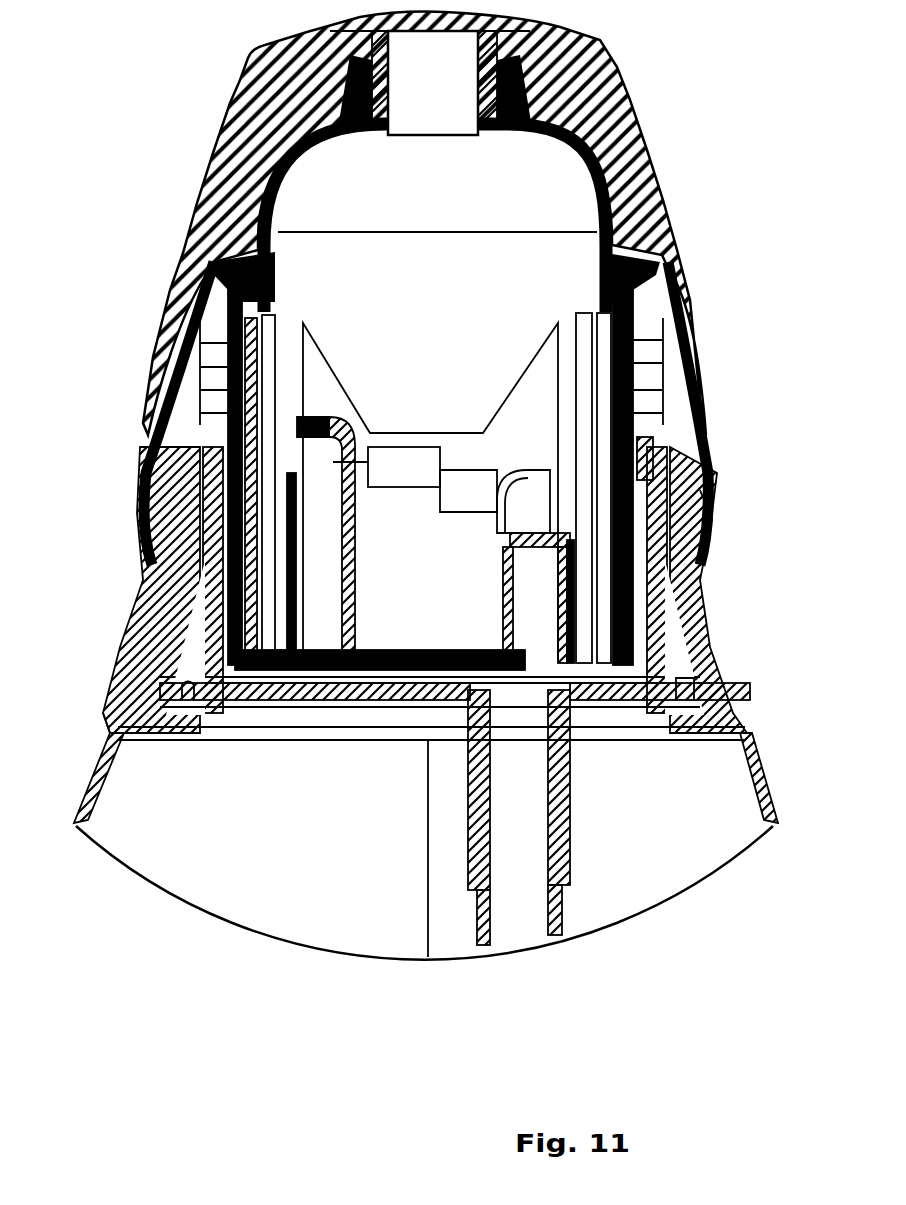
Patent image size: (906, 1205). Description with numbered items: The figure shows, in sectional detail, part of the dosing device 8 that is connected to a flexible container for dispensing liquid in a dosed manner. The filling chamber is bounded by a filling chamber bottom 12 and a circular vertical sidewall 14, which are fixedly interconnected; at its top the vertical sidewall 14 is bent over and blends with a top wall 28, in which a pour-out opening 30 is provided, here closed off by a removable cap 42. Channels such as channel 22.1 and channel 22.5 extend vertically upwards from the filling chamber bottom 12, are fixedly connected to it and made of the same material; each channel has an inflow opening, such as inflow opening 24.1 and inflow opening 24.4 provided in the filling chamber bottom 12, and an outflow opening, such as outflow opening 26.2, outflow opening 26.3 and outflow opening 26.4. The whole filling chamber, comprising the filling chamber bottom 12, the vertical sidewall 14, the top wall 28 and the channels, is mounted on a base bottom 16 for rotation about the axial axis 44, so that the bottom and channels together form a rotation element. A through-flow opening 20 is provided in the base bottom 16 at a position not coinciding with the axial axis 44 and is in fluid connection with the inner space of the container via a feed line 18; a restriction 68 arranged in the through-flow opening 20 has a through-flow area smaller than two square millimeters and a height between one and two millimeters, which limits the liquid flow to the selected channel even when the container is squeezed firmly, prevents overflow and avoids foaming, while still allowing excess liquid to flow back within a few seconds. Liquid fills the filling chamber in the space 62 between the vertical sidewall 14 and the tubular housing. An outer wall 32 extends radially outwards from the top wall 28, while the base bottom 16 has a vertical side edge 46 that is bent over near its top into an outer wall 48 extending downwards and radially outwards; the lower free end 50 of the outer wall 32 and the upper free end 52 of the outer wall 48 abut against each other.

The dosing device 8 is at (666, 942).
The filling chamber bottom 12 is at (382, 648).
The vertical sidewall 14 is at (217, 430).
The base bottom 16 is at (390, 740).
The feed line 18 is at (560, 913).
The through-flow opening 20 is at (573, 743).
The channel 22.1 is at (527, 585).
The channel 22.5 is at (355, 570).
The inflow opening 24.1 is at (710, 653).
The inflow opening 24.4 is at (323, 740).
The outflow opening 26.2 is at (533, 500).
The outflow opening 26.3 is at (398, 468).
The outflow opening 26.4 is at (300, 455).
The top wall 28 is at (608, 170).
The pour-out opening 30 is at (457, 80).
The outer wall 32 is at (710, 423).
The removable cap 42 is at (260, 150).
The axial axis 44 is at (423, 880).
The vertical side edge 46 is at (160, 652).
The outer wall 48 is at (140, 635).
The lower free end 50 is at (655, 480).
The upper free end 52 is at (717, 503).
The space 62 is at (205, 540).
The restriction 68 is at (530, 700).